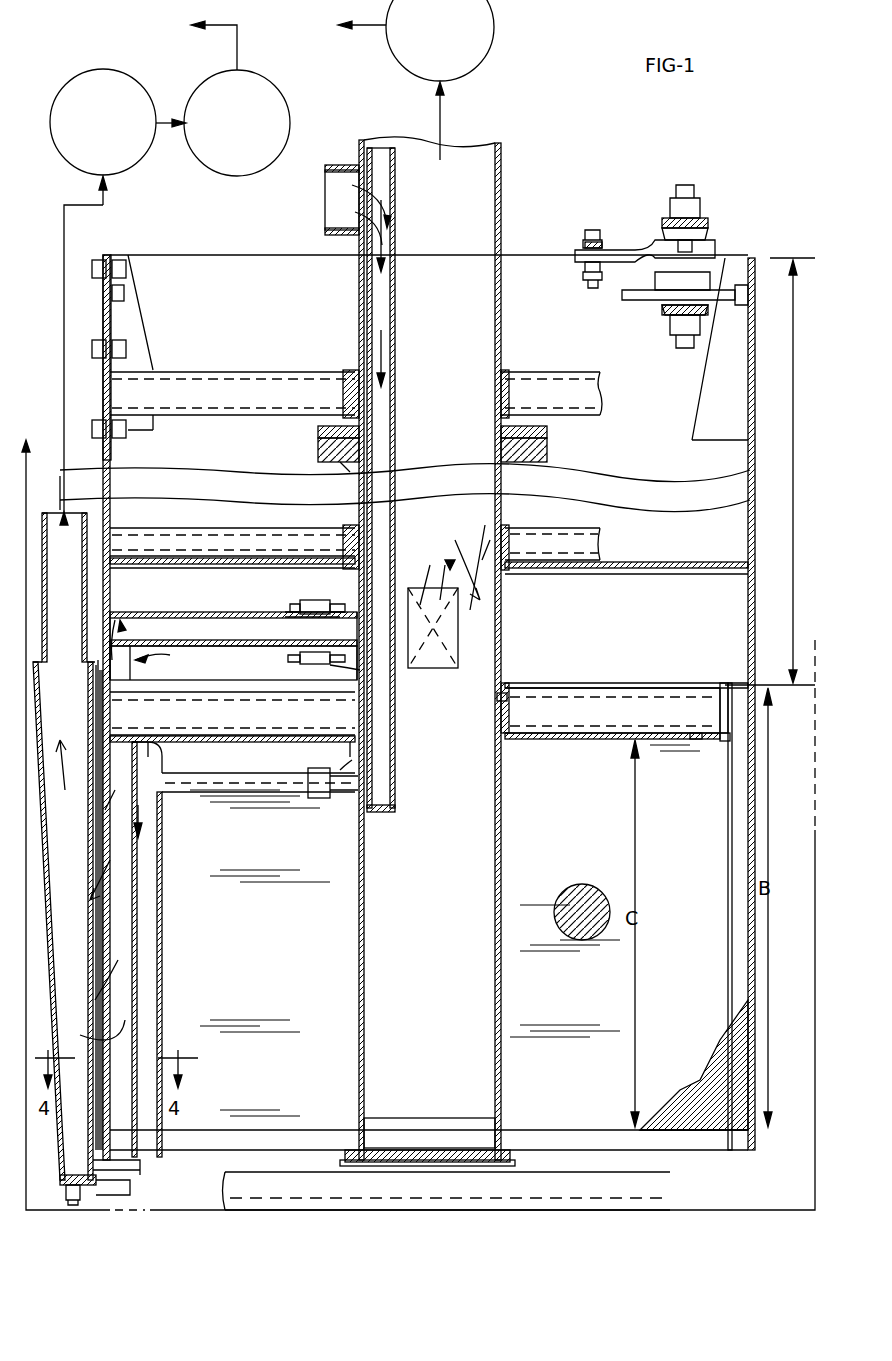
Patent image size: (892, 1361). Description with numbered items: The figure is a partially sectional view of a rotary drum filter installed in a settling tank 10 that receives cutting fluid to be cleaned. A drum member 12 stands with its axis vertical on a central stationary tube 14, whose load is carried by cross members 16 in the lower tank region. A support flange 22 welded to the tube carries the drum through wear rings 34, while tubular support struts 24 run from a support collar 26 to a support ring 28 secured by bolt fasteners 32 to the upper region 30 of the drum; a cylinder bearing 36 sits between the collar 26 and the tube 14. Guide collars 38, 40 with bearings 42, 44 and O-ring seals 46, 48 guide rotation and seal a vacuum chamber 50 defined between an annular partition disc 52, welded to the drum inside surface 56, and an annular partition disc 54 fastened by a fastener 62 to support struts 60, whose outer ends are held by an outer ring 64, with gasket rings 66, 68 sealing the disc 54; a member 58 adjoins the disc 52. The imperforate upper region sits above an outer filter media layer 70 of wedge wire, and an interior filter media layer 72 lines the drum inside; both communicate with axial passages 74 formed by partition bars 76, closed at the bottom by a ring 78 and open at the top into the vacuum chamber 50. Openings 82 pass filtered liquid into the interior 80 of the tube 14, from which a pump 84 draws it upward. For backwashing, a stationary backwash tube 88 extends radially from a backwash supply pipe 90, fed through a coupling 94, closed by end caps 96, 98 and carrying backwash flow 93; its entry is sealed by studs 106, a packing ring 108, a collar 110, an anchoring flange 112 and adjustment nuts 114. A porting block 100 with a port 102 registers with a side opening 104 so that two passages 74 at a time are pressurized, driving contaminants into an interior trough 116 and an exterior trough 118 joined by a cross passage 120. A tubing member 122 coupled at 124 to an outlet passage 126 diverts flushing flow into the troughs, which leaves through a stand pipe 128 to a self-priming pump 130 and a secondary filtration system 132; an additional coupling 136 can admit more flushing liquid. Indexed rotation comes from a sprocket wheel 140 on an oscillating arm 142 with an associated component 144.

The settling tank 10 is at (52, 450).
The drum member 12 is at (758, 620).
The central stationary tube 14 is at (560, 278).
The cross members 16 is at (447, 1191).
The support flange 22 is at (548, 445).
The tubular support struts 24 is at (258, 365).
The support collar 26 is at (345, 368).
The support ring 28 is at (125, 318).
The upper region of the drum member 30 is at (103, 400).
The bolt fasteners 32 is at (97, 258).
The wear rings 34 is at (300, 430).
The cylinder bearing 36 is at (506, 368).
The guide collar 38 is at (508, 530).
The guide collar 40 is at (510, 688).
The bearing 42 is at (345, 525).
The bearing 44 is at (330, 682).
The O-ring seal 46 is at (498, 548).
The O-ring seal 48 is at (495, 708).
The vacuum chamber 50 is at (425, 593).
The annular partition disc 52 is at (662, 562).
The annular partition disc 54 is at (655, 722).
The drum inside surface 56 is at (745, 462).
The pipe 58 is at (570, 528).
The support struts 60 is at (598, 668).
The fastener 62 is at (152, 742).
The outer ring 64 is at (722, 680).
The gasket ring 66 is at (720, 745).
The gasket ring 68 is at (505, 740).
The filter media layer 70 is at (758, 830).
The filter media layer 72 is at (667, 813).
The axially extending passages 74 is at (120, 868).
The partition bars 76 is at (118, 905).
The ring 78 is at (752, 1148).
The interior of the central tube 80 is at (427, 651).
The openings 82 is at (500, 660).
The pump 84 is at (488, 5).
The stationary backwash tube 88 is at (135, 615).
The backwash supply pipe 90 is at (396, 405).
The flow path 93 is at (385, 320).
The coupling 94 is at (340, 168).
The end cap 96 is at (384, 812).
The end cap 98 is at (388, 147).
The porting block 100 is at (233, 663).
The port 102 is at (100, 675).
The side opening 104 is at (116, 618).
The studs 106 is at (312, 602).
The packing ring 108 is at (360, 680).
The collar 110 is at (320, 668).
The anchoring flange 112 is at (298, 600).
The adjustment nuts 114 is at (278, 635).
The open-faced trough 116 is at (108, 1003).
The open-faced trough 118 is at (115, 958).
The cross passage 120 is at (148, 1160).
The drain pipe 122 is at (240, 773).
The coupling 124 is at (315, 800).
The outlet passage 126 is at (356, 770).
The stand pipe 128 is at (64, 587).
The self-priming pump 130 is at (97, 78).
The secondary filtration system 132 is at (210, 85).
The additional coupling 136 is at (130, 1190).
The sprocket wheel 140 is at (640, 300).
The arm 142 is at (652, 248).
The spacer 144 is at (655, 283).